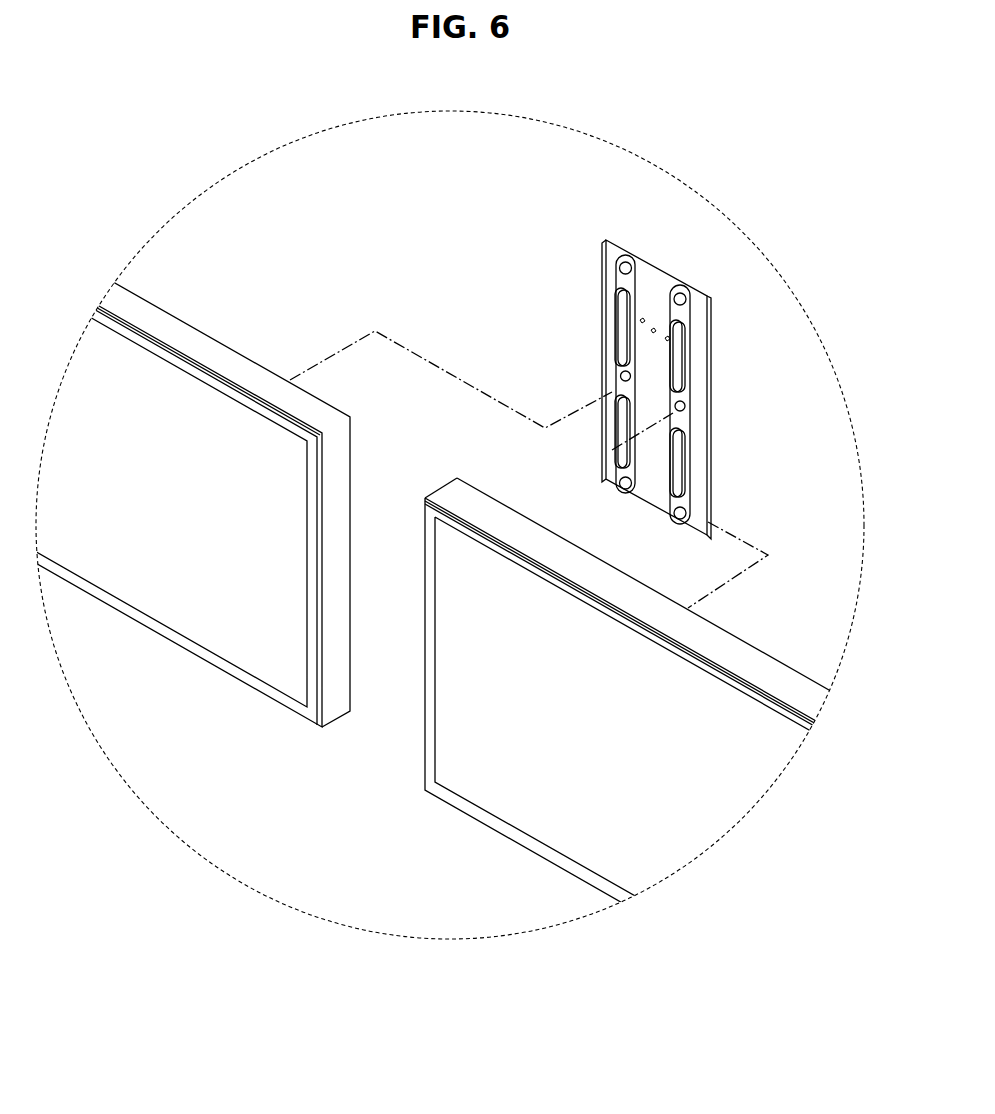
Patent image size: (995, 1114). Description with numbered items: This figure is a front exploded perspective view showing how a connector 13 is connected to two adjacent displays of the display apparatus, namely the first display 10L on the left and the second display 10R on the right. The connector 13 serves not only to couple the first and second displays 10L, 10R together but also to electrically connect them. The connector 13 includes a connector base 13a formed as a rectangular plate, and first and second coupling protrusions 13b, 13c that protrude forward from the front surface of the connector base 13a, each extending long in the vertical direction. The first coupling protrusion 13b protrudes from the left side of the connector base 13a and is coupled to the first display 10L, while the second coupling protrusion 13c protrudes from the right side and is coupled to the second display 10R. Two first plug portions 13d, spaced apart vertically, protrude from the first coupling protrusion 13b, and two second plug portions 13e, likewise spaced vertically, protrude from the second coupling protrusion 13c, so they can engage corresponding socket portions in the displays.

The first display 10L is at (218, 317).
The second display 10R is at (762, 640).
The connector 13 is at (652, 328).
The connector base 13a is at (708, 352).
The first coupling protrusion 13b is at (642, 258).
The second coupling protrusion 13c is at (698, 288).
The first plug portions 13d is at (622, 440).
The second plug portions 13e is at (700, 392).